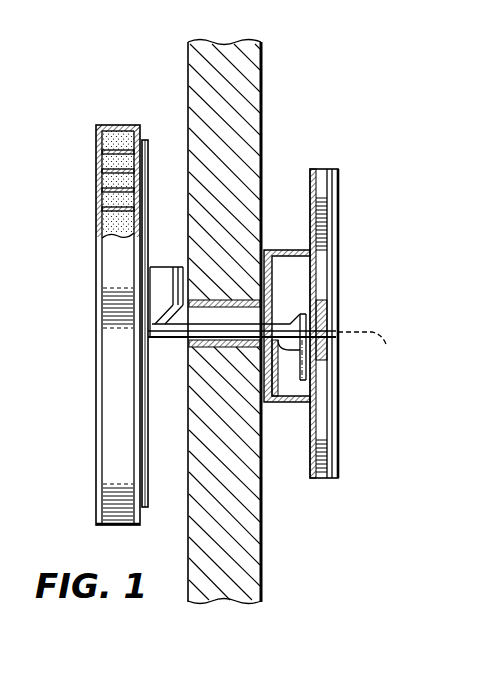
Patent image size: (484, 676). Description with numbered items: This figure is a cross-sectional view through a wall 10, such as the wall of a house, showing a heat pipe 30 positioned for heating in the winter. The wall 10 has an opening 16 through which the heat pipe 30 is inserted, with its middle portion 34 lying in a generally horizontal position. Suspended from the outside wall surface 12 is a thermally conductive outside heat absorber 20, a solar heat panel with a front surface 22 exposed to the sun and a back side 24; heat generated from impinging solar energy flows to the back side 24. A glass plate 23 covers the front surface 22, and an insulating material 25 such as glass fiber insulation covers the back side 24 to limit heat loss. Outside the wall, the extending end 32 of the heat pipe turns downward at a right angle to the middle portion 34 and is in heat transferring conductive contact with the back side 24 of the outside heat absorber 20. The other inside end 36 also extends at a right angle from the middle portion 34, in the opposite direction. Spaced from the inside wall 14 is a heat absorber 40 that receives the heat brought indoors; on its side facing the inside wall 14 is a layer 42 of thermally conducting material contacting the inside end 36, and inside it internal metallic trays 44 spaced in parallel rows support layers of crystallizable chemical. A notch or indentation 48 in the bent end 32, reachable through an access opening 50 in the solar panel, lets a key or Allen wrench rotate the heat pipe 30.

The wall 10 is at (238, 62).
The outside wall surface 12 is at (262, 75).
The inside wall 14 is at (188, 59).
The opening 16 is at (187, 353).
The outside heat absorber 20 is at (329, 160).
The front surface 22 is at (338, 293).
The glass plate 23 is at (338, 203).
The back side 24 is at (313, 275).
The insulating material 25 is at (310, 212).
The heat pipe 30 is at (236, 294).
The extending end 32 is at (338, 351).
The middle portion 34 is at (216, 344).
The inside end 36 is at (166, 278).
The heat absorber 40 is at (97, 152).
The layer of thermally conducting material 42 is at (145, 142).
The internal metallic trays 44 is at (103, 187).
The notch or indentation 48 is at (374, 348).
The access opening 50 is at (340, 317).